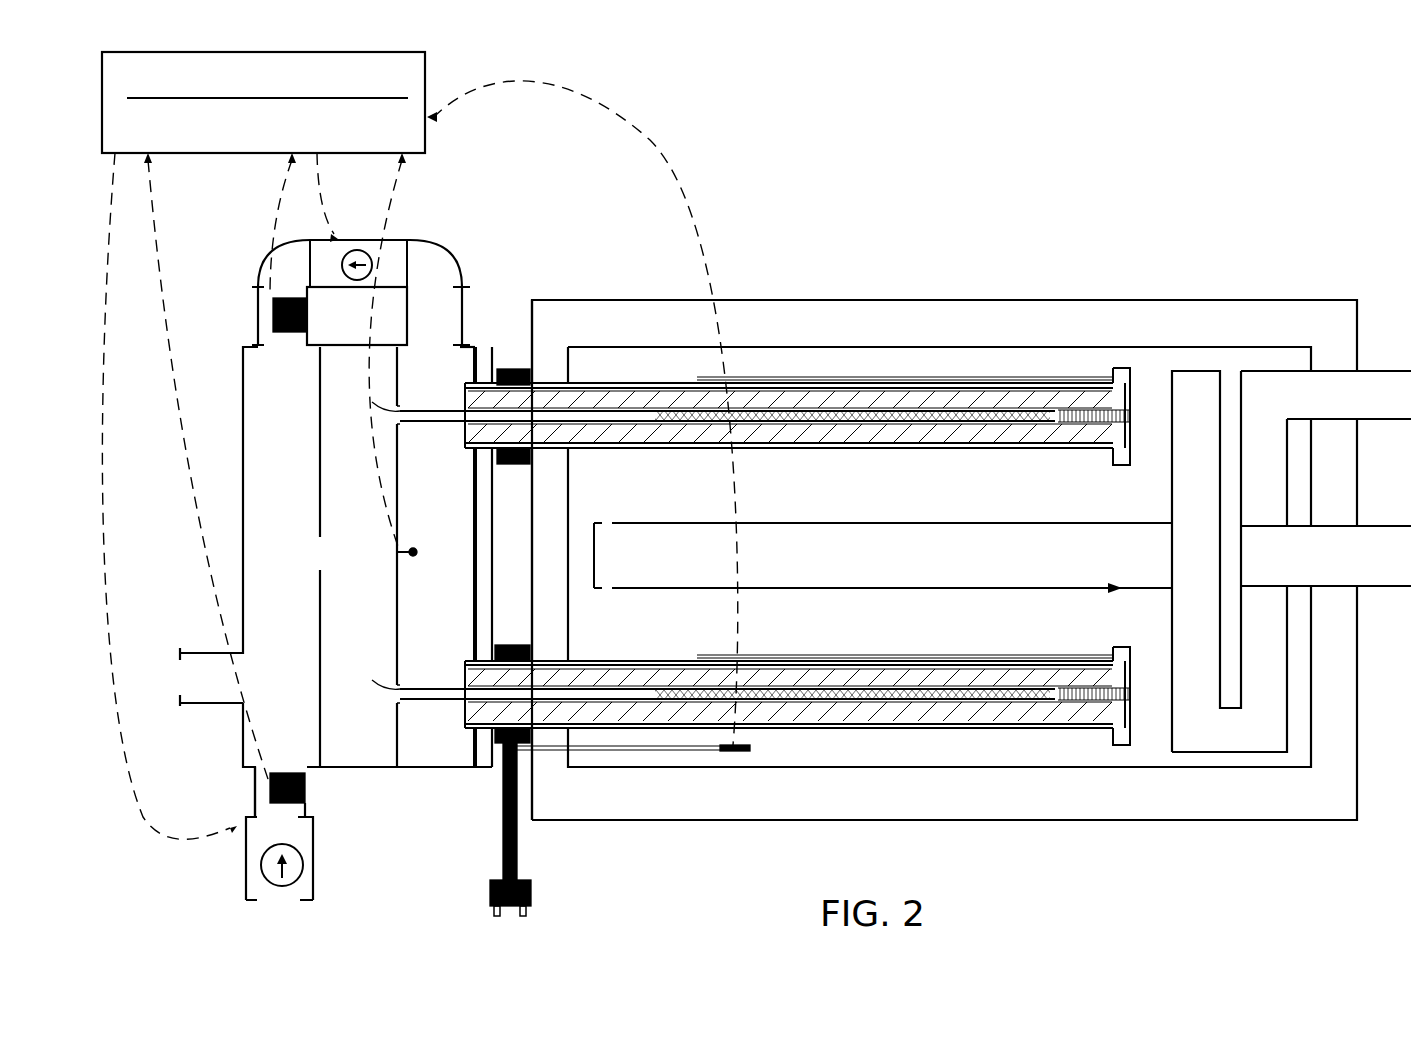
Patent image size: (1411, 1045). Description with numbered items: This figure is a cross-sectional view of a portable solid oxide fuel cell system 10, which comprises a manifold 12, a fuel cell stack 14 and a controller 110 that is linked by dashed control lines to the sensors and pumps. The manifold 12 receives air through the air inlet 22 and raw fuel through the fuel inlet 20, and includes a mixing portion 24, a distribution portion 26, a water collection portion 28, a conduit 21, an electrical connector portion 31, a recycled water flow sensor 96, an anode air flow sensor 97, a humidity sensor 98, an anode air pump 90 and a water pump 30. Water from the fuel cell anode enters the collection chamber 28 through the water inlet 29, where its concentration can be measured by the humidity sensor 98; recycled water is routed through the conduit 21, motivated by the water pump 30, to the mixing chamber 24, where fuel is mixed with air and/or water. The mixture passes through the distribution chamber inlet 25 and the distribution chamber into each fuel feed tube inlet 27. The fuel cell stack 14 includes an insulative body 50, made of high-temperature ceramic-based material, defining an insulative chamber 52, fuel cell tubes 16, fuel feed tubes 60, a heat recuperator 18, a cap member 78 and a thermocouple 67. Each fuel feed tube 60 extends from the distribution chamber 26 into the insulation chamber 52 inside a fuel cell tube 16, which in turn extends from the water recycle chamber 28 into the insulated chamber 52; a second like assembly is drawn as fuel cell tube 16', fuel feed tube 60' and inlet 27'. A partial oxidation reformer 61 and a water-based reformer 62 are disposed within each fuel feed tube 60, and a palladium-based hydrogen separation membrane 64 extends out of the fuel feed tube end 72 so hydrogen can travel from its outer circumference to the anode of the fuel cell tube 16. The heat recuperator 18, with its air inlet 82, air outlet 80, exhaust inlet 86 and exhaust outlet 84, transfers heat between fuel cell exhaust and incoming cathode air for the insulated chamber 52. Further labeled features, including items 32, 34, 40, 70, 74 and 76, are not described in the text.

The solid oxide fuel cell system 10 is at (226, 272).
The manifold 12 is at (330, 582).
The fuel cell stack 14 is at (971, 555).
The fuel cell tube 16 is at (765, 505).
The second electrode assembly 16' is at (745, 684).
The heat recuperator 18 is at (1112, 589).
The fuel inlet 20 is at (205, 650).
The conduit 21 is at (270, 322).
The air inlet 22 is at (260, 812).
The mixing portion 24 is at (265, 480).
The distribution chamber inlet 25 is at (325, 553).
The distribution portion 26 is at (352, 766).
The fuel feed tube inlet 27 is at (381, 401).
The second conductor opening 27' is at (380, 680).
The water collection portion 28 is at (425, 752).
The water inlet 29 is at (470, 397).
The water pump 30 is at (362, 250).
The electrical connector portion 31 is at (495, 762).
The seal 32 is at (519, 369).
The seal 34 is at (515, 466).
The power connector 40 is at (520, 880).
The insulative body 50 is at (1190, 798).
The insulative chamber 52 is at (895, 757).
The fuel feed tube 60 is at (402, 439).
The second conductor 60' is at (402, 718).
The partial oxidation reformer 61 is at (668, 409).
The water-based reformer 62 is at (756, 420).
The hydrogen separation membrane 64 is at (1126, 418).
The thermocouple 67 is at (745, 752).
The dielectric 70 is at (1015, 432).
The fuel feed tube end 72 is at (1100, 378).
The outer tube top wall 74 is at (597, 387).
The outer tube bottom wall 76 is at (605, 450).
The cap member 78 is at (1118, 368).
The air outlet 80 is at (608, 582).
The air inlet 82 is at (1340, 384).
The exhaust outlet 84 is at (1376, 576).
The exhaust inlet 86 is at (1240, 556).
The anode air pump 90 is at (248, 853).
The recycled water flow sensor 96 is at (307, 312).
The anode air flow sensor 97 is at (305, 777).
The humidity sensor 98 is at (410, 554).
The controller 110 is at (302, 150).